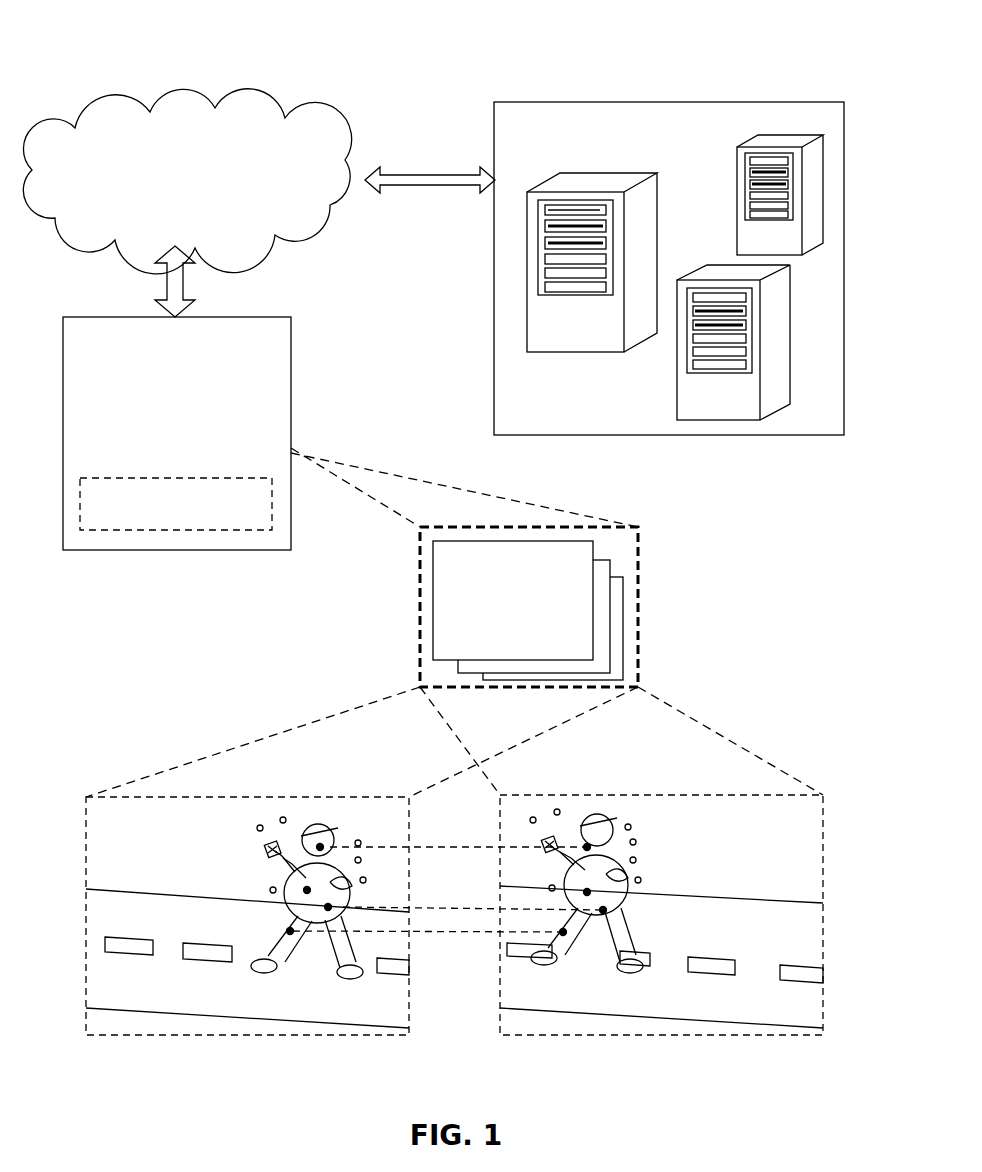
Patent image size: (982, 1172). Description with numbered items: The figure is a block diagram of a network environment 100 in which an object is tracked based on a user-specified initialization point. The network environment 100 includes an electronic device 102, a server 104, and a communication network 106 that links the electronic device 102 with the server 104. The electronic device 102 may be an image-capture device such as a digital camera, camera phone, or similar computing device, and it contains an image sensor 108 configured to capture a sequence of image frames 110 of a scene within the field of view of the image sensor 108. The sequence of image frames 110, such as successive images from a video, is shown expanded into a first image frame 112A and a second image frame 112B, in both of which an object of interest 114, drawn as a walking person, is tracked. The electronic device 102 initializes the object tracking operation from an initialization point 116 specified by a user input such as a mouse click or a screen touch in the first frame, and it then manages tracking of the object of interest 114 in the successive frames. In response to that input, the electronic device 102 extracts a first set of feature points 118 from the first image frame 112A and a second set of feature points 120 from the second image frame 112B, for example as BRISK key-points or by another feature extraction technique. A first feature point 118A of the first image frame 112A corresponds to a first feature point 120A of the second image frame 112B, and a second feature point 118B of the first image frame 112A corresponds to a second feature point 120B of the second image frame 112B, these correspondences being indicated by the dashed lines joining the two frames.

The network environment 100 is at (106, 44).
The electronic device 102 is at (177, 433).
The server 104 is at (669, 268).
The communication network 106 is at (187, 181).
The image sensor 108 is at (176, 504).
The sequence of image frames 110 is at (640, 570).
The first image frame 112A is at (86, 900).
The second image frame 112B is at (500, 847).
The object of interest 114 is at (306, 888).
The initialization point 116 is at (306, 889).
The first set of feature points 118 is at (357, 857).
The first feature point of the first image frame 118A is at (330, 909).
The second feature point of the first image frame 118B is at (292, 933).
The second set of feature points 120 is at (603, 908).
The first feature point of the second image frame 120A is at (604, 913).
The second feature point of the second image frame 120B is at (564, 935).